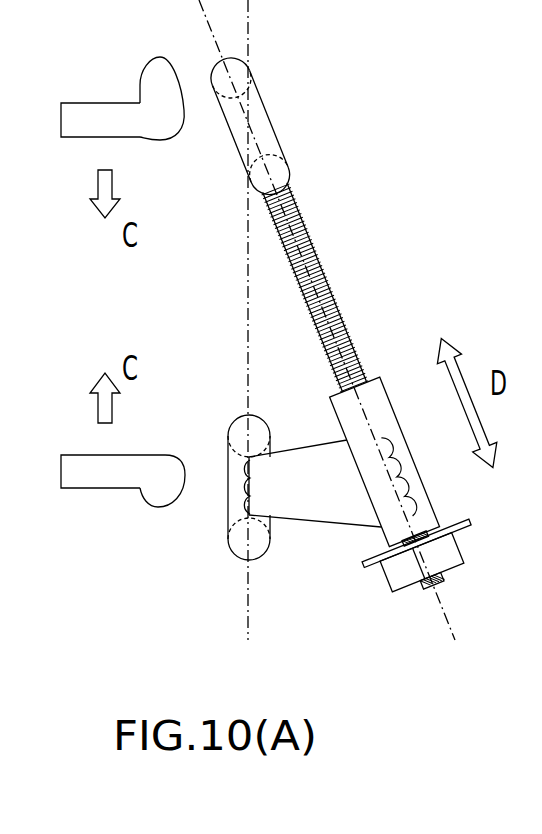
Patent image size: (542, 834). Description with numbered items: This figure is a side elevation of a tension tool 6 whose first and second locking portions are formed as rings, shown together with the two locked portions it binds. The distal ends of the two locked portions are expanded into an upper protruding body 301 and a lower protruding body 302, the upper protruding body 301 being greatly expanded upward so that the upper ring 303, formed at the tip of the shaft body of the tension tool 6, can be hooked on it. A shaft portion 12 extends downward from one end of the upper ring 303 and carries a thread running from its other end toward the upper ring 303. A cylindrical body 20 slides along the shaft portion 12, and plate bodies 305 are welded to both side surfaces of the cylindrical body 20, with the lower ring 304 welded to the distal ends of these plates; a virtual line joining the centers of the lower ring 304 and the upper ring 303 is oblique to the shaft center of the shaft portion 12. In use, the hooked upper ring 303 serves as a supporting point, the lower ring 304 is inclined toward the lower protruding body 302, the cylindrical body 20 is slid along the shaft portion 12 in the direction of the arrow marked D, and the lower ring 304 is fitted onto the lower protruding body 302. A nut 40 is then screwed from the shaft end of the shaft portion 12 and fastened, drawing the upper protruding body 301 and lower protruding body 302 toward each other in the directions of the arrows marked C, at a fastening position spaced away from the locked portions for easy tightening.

The tension tool 6 is at (395, 208).
The shaft portion 12 is at (335, 307).
The cylindrical body 20 is at (388, 423).
The nut 40 is at (433, 560).
The upper protruding body 301 is at (108, 118).
The lower protruding body 302 is at (108, 480).
The upper ring 303 is at (262, 122).
The lower ring 304 is at (248, 424).
The plate body 305 is at (321, 505).